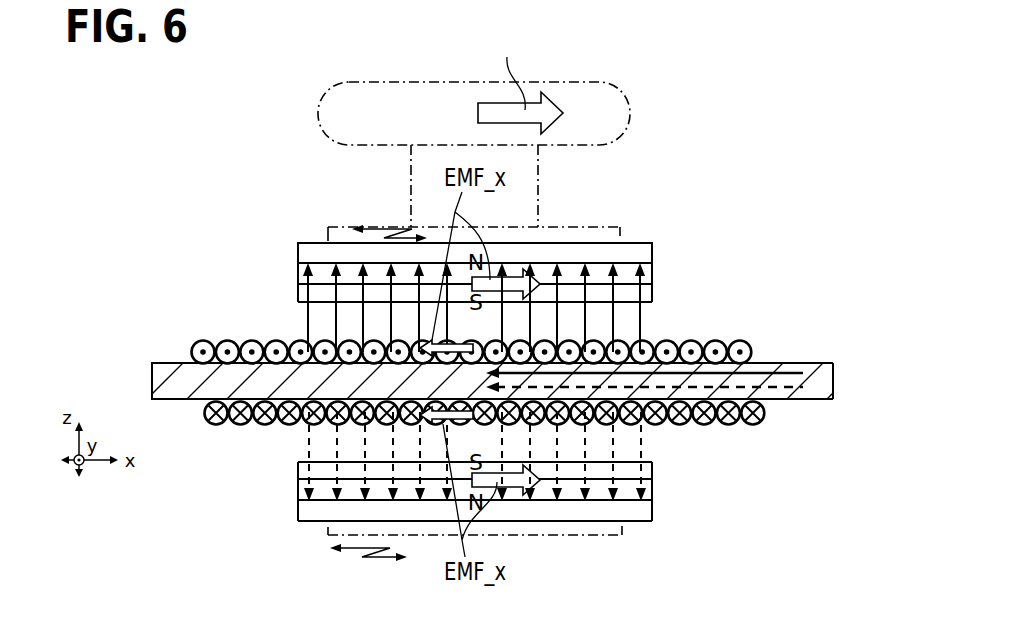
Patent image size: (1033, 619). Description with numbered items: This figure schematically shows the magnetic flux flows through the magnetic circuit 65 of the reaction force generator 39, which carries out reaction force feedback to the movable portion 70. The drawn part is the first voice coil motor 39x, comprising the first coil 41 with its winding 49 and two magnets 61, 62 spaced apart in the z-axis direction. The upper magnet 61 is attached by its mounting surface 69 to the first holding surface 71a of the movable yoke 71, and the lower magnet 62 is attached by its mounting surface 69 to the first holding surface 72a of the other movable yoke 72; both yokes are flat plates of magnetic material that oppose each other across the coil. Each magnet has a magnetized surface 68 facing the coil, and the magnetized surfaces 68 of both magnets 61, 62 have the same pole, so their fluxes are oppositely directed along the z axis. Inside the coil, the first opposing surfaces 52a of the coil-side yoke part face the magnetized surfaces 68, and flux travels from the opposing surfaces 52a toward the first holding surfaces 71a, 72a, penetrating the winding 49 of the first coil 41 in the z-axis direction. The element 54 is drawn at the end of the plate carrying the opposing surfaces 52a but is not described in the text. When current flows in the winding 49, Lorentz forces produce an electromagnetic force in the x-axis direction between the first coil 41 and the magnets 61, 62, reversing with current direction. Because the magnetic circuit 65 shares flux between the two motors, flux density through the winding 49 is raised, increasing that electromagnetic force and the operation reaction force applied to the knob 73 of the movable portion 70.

The reaction force generator 39 is at (637, 219).
The first voice coil motor 39x is at (721, 295).
The first coil 41 is at (745, 342).
The winding 49 is at (760, 425).
The first opposing surface 52a is at (494, 377).
The stator plate end 54 is at (812, 400).
The magnet 61 is at (301, 294).
The magnet 62 is at (298, 479).
The magnetic circuit 65 is at (805, 362).
The magnetized surface 68 is at (335, 302).
The mounting surface 69 is at (568, 262).
The movable portion 70 is at (474, 88).
The movable yoke 71 is at (310, 241).
The first holding surface 71a is at (652, 265).
The movable yoke 72 is at (305, 521).
The first holding surface 72a is at (652, 494).
The knob 73 is at (390, 82).